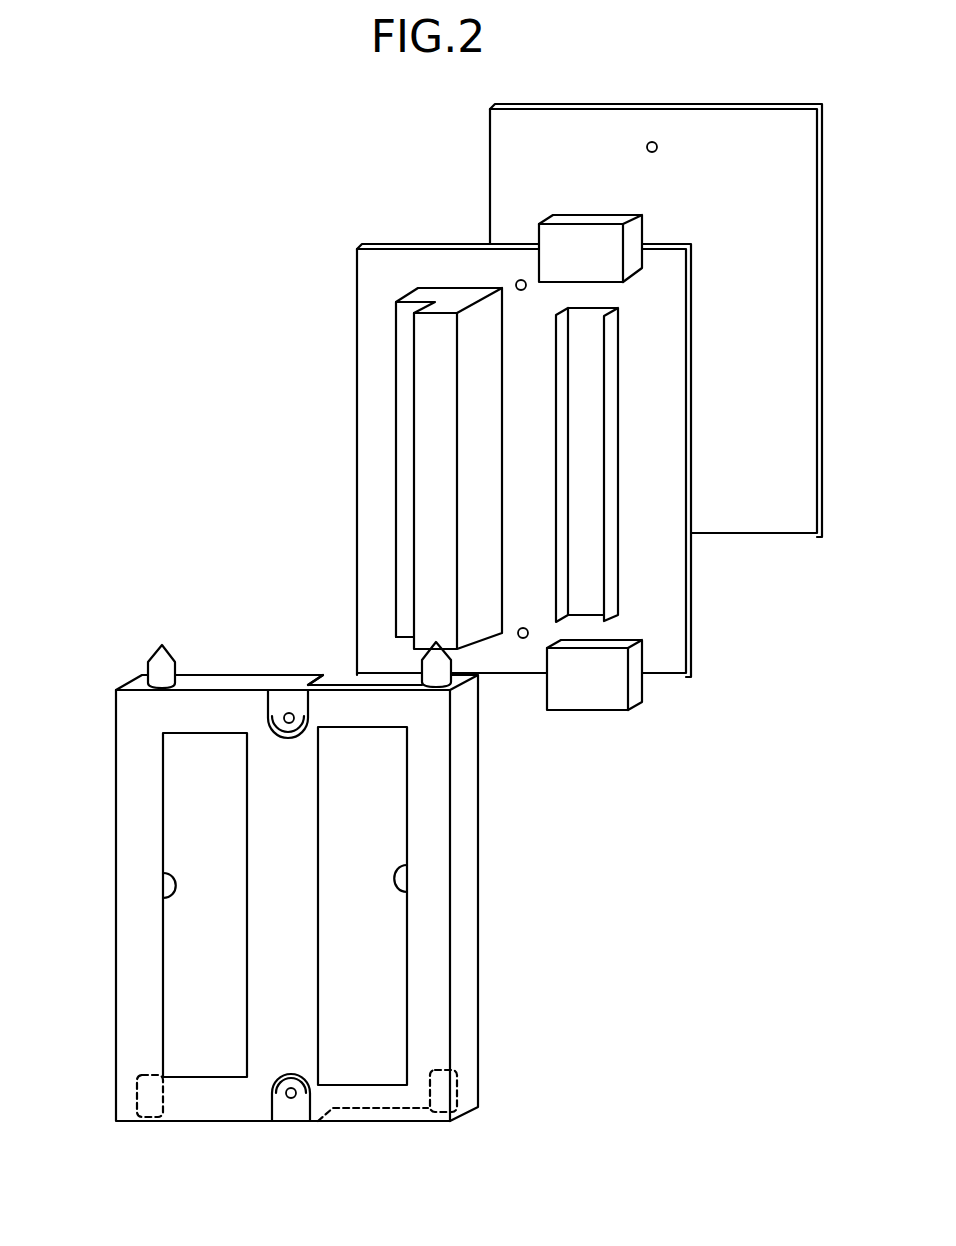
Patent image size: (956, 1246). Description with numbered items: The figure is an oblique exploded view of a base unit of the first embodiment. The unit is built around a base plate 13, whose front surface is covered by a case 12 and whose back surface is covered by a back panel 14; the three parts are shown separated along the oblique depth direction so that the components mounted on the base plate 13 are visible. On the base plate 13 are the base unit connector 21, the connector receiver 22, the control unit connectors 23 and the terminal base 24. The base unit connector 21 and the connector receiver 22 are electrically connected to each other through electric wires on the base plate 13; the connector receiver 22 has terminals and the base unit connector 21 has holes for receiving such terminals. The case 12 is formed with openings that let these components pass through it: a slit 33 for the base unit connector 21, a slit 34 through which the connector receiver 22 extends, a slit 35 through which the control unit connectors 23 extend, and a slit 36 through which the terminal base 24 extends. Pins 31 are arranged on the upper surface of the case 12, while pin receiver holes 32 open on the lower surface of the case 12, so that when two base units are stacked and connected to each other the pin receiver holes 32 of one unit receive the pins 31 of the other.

The case 12 is at (467, 948).
The base plate 13 is at (370, 480).
The back panel 14 is at (508, 151).
The base unit connector 21 is at (551, 239).
The connector receiver 22 is at (590, 702).
The control unit connector 23 is at (610, 568).
The terminal base 24 is at (403, 375).
The pin 31 is at (163, 658).
The pin receiver hole 32 is at (150, 1108).
The slit 33 is at (335, 682).
The slit 34 is at (390, 1115).
The slit 35 is at (407, 865).
The slit 36 is at (163, 873).